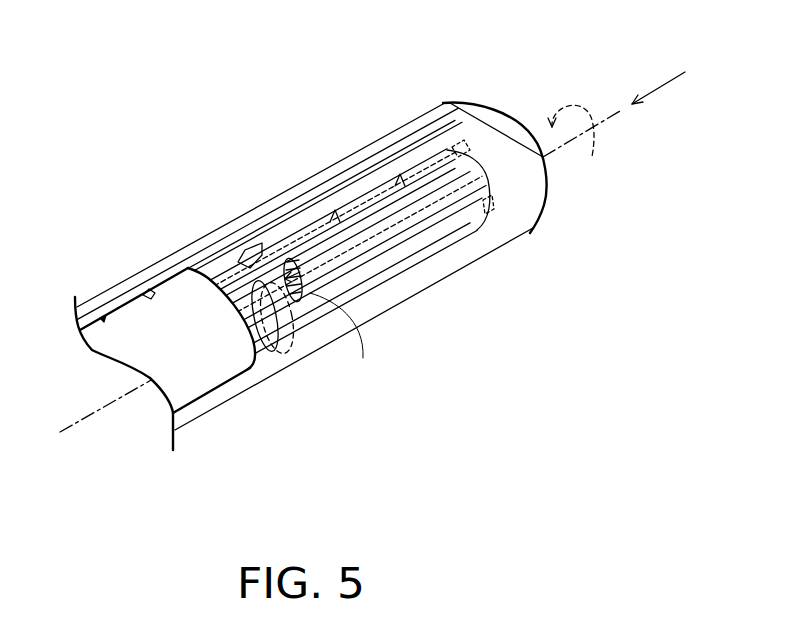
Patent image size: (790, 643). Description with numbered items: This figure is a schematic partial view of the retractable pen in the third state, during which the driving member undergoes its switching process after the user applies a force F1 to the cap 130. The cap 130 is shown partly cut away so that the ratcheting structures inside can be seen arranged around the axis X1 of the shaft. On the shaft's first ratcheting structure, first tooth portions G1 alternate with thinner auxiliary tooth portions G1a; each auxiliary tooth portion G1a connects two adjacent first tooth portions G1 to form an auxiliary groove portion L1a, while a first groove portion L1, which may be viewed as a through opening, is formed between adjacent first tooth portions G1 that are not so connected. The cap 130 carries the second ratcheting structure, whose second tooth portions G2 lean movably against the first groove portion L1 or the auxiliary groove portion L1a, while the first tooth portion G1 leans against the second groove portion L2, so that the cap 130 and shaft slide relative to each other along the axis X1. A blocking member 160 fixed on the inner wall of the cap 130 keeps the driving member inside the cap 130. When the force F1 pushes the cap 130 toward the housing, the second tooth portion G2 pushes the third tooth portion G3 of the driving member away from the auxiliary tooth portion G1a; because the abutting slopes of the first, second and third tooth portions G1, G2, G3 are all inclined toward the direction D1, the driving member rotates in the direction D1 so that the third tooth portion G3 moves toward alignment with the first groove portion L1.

The cap 130 is at (403, 122).
The blocking member 160 is at (213, 368).
The first groove portion L1 is at (364, 216).
The auxiliary groove portion L1a is at (397, 232).
The second groove portion L2 is at (482, 163).
The first tooth portion G1 is at (308, 263).
The auxiliary tooth portion G1a is at (347, 341).
The second tooth portion G2 is at (279, 352).
The third tooth portion G3 is at (258, 328).
The direction D1 is at (571, 118).
The force F1 is at (671, 80).
The axis X1 is at (613, 110).